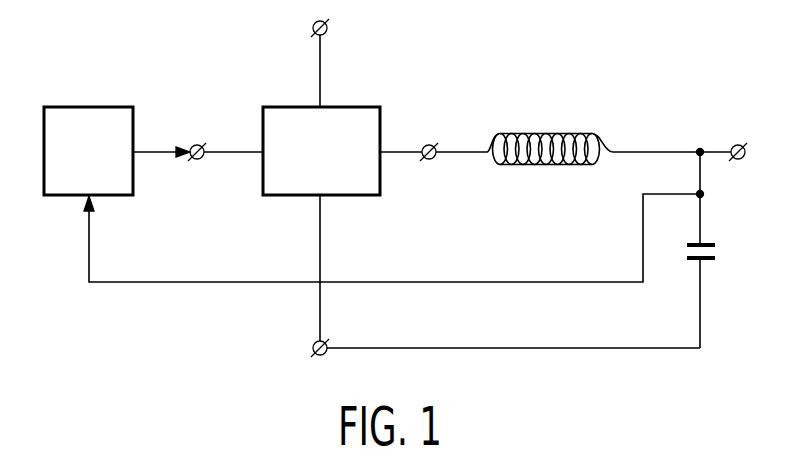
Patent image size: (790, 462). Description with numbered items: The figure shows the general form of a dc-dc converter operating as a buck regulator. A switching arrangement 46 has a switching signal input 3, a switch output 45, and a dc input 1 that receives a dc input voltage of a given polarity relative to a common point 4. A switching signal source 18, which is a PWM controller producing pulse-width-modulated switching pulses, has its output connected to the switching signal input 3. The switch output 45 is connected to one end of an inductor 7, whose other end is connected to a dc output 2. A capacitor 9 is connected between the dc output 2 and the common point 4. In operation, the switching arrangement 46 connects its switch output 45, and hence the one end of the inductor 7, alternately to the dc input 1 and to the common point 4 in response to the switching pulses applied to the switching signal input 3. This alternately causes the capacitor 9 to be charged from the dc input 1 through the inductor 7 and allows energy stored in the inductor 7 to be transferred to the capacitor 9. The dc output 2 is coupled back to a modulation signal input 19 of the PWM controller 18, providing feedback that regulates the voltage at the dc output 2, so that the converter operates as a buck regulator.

The dc input 1 is at (312, 25).
The dc output 2 is at (737, 143).
The switching signal input 3 is at (197, 143).
The common point 4 is at (313, 347).
The inductor 7 is at (550, 131).
The capacitor 9 is at (716, 251).
The switching signal source 18 is at (88, 106).
The modulation signal input 19 is at (83, 198).
The switch output 45 is at (428, 143).
The switching arrangement 46 is at (362, 106).